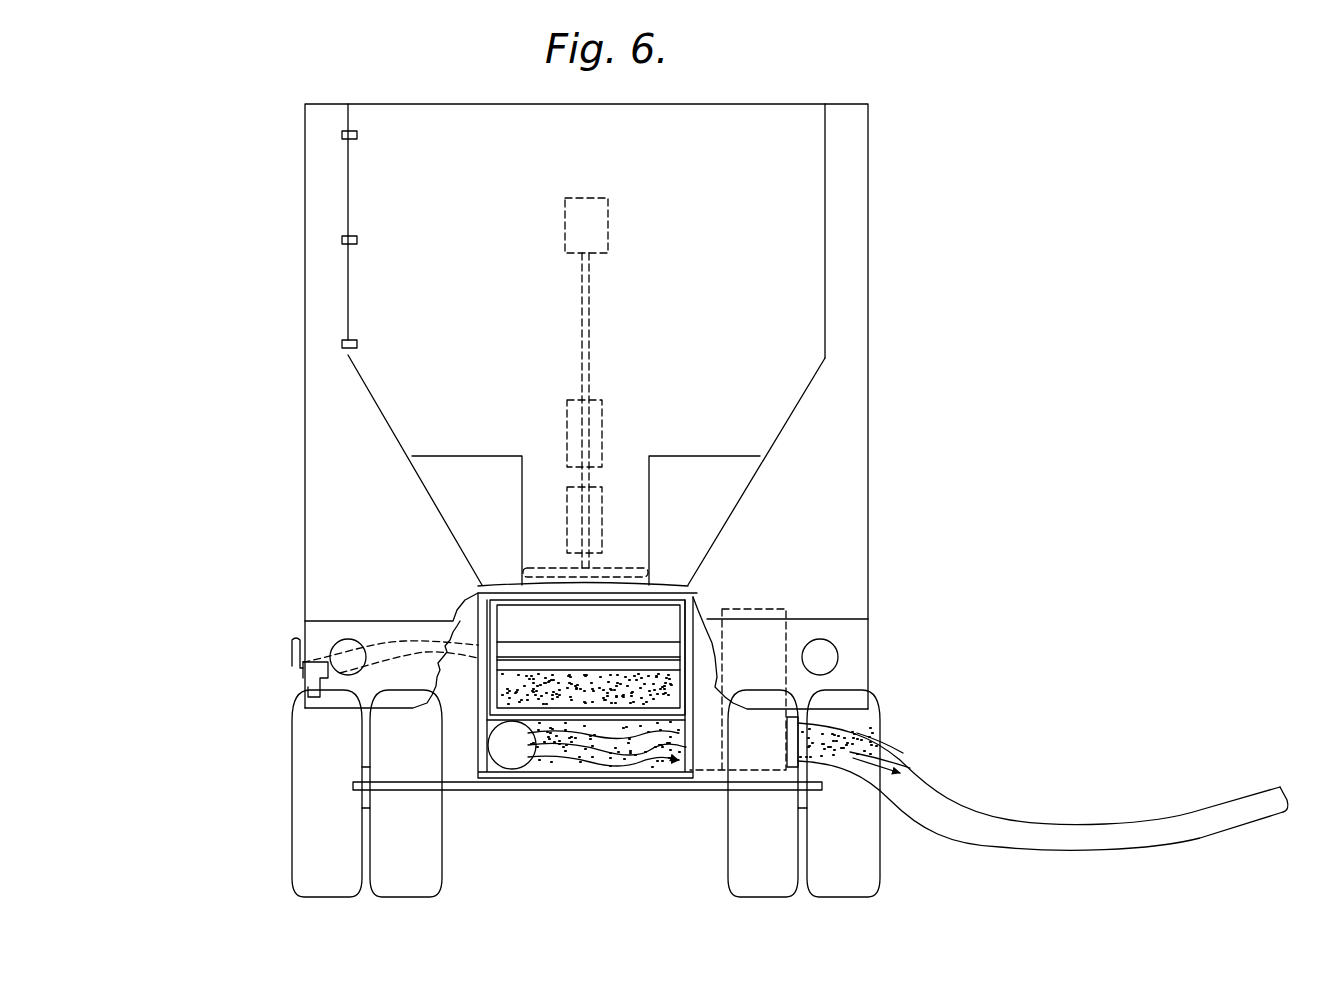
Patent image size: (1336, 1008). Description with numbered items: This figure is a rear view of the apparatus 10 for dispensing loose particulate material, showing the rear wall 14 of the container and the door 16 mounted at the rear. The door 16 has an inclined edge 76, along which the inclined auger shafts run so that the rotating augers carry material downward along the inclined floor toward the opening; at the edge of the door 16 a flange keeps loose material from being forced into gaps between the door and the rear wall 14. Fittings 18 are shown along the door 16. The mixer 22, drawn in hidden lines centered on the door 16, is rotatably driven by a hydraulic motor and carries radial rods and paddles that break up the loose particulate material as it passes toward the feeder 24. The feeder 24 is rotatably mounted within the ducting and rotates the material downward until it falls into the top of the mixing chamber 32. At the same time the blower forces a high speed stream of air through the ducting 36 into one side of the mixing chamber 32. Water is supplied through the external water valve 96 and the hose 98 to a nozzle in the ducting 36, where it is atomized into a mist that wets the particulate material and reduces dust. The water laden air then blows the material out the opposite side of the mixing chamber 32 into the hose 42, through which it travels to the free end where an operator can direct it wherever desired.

The material spreading apparatus 10 is at (940, 160).
The rear wall 14 is at (816, 553).
The door 16 is at (720, 316).
The hinge of hopper wall 18 is at (342, 345).
The mixer 22 is at (578, 323).
The feeder 24 is at (680, 642).
The mixing chamber 32 is at (622, 763).
The ducting 36 is at (515, 763).
The hose 42 is at (1011, 820).
The inclined edge 76 is at (385, 424).
The water valve 96 is at (303, 672).
The hose 98 is at (405, 657).